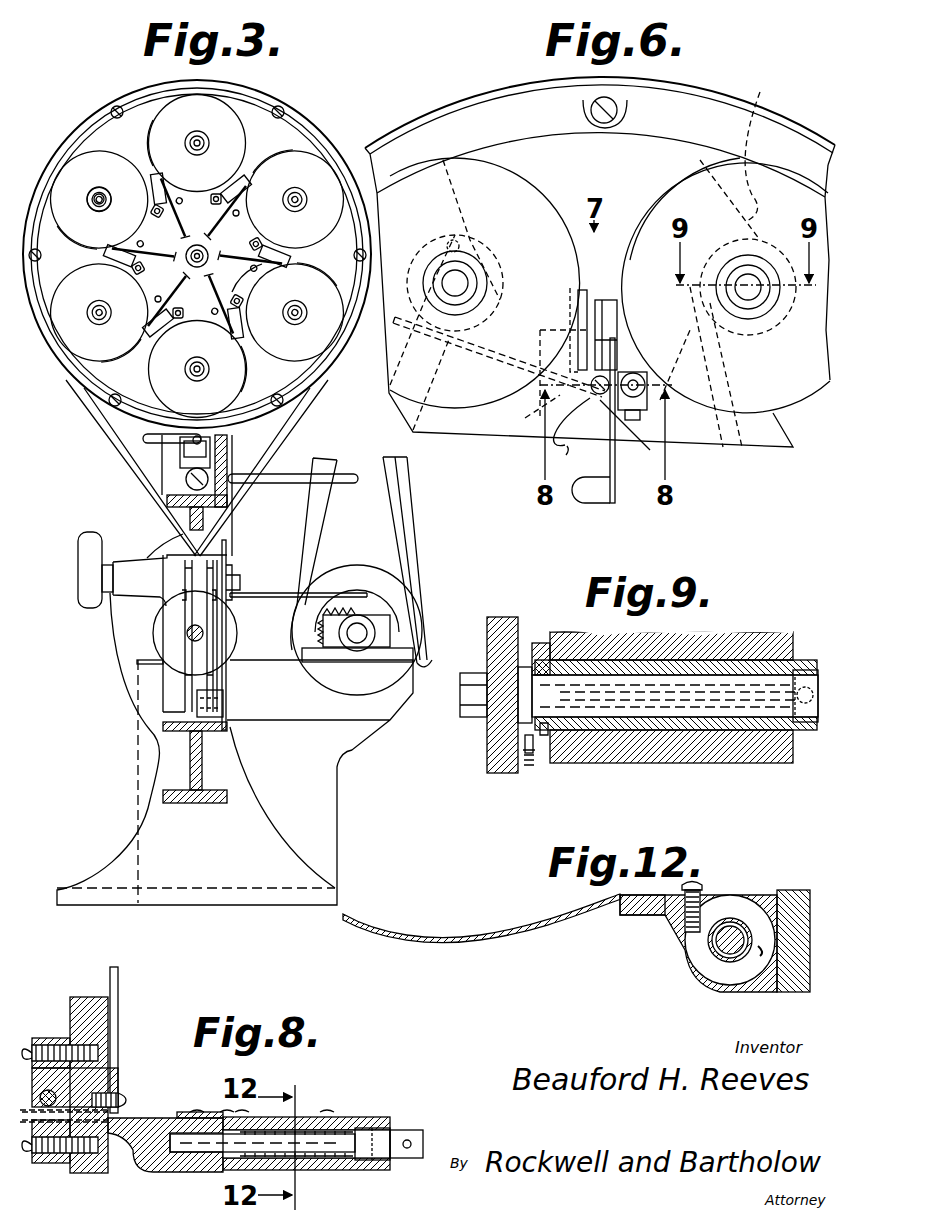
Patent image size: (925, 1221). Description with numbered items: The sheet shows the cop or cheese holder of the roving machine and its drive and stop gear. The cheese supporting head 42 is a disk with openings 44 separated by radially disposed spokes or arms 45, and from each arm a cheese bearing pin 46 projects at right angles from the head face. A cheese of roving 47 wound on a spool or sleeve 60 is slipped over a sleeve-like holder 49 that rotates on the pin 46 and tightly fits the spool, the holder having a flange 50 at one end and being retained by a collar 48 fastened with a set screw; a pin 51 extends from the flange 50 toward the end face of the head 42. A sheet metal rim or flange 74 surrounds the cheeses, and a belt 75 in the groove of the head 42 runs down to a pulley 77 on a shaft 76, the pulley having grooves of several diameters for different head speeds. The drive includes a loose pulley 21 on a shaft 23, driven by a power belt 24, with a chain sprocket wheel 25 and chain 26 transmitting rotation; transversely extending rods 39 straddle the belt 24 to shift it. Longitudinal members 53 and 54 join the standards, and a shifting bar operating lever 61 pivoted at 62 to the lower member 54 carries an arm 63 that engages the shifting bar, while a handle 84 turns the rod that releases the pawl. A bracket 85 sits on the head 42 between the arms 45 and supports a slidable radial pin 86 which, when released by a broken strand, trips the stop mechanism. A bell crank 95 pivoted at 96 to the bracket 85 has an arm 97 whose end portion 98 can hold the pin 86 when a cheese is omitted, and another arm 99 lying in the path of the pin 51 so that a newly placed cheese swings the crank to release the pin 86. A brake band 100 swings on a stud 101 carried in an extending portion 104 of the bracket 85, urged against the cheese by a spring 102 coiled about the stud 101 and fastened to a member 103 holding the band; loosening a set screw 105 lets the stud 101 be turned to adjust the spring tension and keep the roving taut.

In FIG. 3, the loose pulley 21 is at (358, 574).
In FIG. 3, the shaft 23 is at (357, 643).
In FIG. 3, the power driven belt 24 is at (406, 520).
In FIG. 3, the chain sprocket wheel 25 is at (360, 609).
In FIG. 3, the chain 26 is at (266, 593).
In FIG. 3, the transversely extending rods 39 is at (345, 478).
In FIG. 3, the cop or cheese supporting head 42 is at (199, 239).
In FIG. 8, the cop or cheese supporting head 42 is at (85, 1000).
In FIG. 3, the openings 44 is at (196, 256).
In FIG. 6, the openings 44 is at (603, 290).
In FIG. 6, the spokes or arms 45 is at (750, 110).
In FIG. 9, the spokes or arms 45 is at (498, 760).
In FIG. 3, the cop or cheese bearing pin 46 is at (101, 194).
In FIG. 6, the cop or cheese bearing pin 46 is at (460, 284).
In FIG. 9, the cop or cheese bearing pin 46 is at (550, 697).
In FIG. 9, the roving 47 is at (715, 645).
In FIG. 9, the collar 48 is at (806, 670).
In FIG. 9, the sleeve-like holder 49 is at (760, 660).
In FIG. 9, the flange 50 is at (540, 643).
In FIG. 6, the pin 51 is at (458, 246).
In FIG. 9, the pin 51 is at (535, 762).
In FIG. 3, the longitudinally directed member 53 is at (222, 475).
In FIG. 3, the lower supporting member 54 is at (198, 765).
In FIG. 9, the spool or sleeve 60 is at (700, 742).
In FIG. 3, the shifting bar operating lever 61 is at (193, 562).
In FIG. 3, the pivot 62 is at (214, 704).
In FIG. 3, the arm 63 is at (229, 562).
In FIG. 3, the sheet metal rim or flange 74 is at (318, 132).
In FIG. 3, the belt 75 is at (304, 403).
In FIG. 3, the shaft 76 is at (190, 636).
In FIG. 3, the pulley 77 is at (158, 627).
In FIG. 3, the handle 84 is at (143, 438).
In FIG. 3, the bracket 85 is at (262, 250).
In FIG. 6, the bracket 85 is at (501, 380).
In FIG. 8, the bracket 85 is at (45, 1040).
In FIG. 6, the slidable pin 86 is at (597, 410).
In FIG. 6, the bell crank 95 is at (566, 446).
In FIG. 6, the pivot 96 is at (640, 410).
In FIG. 8, the pivot 96 is at (125, 1098).
In FIG. 6, the arm 97 is at (597, 300).
In FIG. 6, the end portion 98 is at (585, 290).
In FIG. 6, the arm 99 is at (491, 352).
In FIG. 8, the arm 99 is at (115, 1010).
In FIG. 12, the brake band 100 is at (412, 930).
In FIG. 12, the stud 101 is at (730, 942).
In FIG. 12, the spring 102 is at (705, 935).
In FIG. 8, the spring 102 is at (312, 1125).
In FIG. 12, the member 103 is at (645, 905).
In FIG. 8, the extending portion 104 is at (185, 1155).
In FIG. 3, the set screw 105 is at (244, 291).
In FIG. 6, the set screw 105 is at (650, 420).